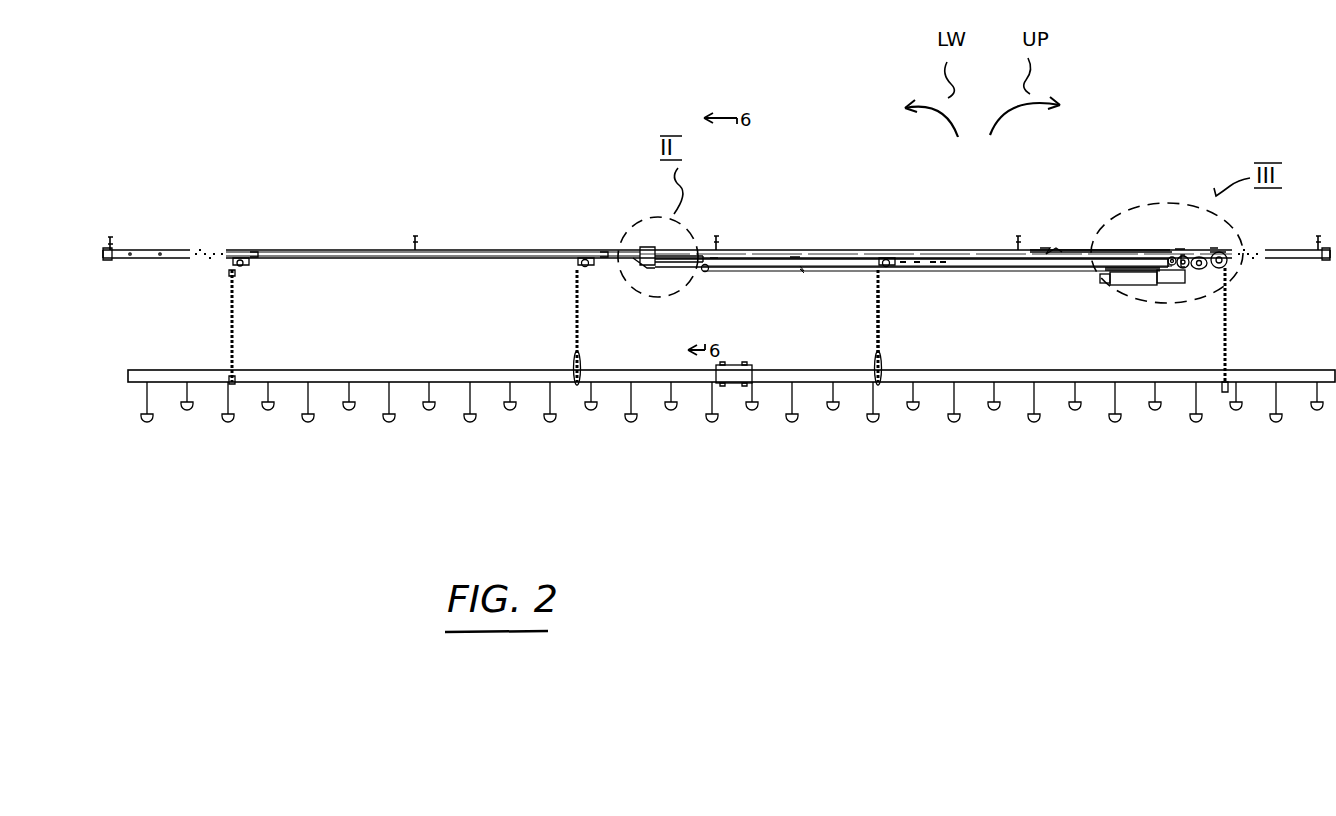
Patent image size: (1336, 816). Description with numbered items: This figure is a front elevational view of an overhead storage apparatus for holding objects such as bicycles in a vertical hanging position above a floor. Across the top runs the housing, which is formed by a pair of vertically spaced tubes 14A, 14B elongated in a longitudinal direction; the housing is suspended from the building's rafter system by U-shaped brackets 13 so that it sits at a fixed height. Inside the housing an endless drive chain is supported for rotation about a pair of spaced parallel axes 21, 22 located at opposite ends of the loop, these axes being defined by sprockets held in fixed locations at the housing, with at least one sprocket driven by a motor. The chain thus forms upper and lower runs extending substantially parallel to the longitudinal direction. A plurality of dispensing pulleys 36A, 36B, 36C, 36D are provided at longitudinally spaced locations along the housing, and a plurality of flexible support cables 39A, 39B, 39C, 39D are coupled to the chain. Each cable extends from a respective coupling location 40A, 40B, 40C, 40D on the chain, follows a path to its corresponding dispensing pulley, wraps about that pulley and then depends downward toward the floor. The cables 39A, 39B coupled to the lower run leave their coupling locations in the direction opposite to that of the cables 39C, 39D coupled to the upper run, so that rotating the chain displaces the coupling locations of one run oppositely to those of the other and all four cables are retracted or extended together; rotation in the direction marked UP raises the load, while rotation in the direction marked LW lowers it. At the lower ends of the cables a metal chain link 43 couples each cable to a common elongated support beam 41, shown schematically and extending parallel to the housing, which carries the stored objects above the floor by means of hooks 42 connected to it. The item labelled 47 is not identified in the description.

The U-shaped brackets 13 is at (418, 246).
The track 47 is at (477, 248).
The parallel axis 22 is at (686, 256).
The tube 14A is at (840, 250).
The tube 14B is at (977, 260).
The parallel axis 21 is at (1175, 245).
The coupling location 40A is at (720, 278).
The coupling location 40B is at (970, 294).
The coupling location 40C is at (1159, 242).
The coupling location 40D is at (1151, 218).
The support cable 39A is at (728, 280).
The support cable 39B is at (870, 283).
The support cable 39C is at (1080, 250).
The support cable 39D is at (178, 300).
The dispensing pulley 36A is at (1214, 268).
The dispensing pulley 36B is at (888, 267).
The dispensing pulley 36C is at (584, 268).
The dispensing pulley 36D is at (244, 264).
The metal chain link 43 is at (883, 323).
The beam 41 is at (816, 385).
The hooks 42 is at (878, 417).